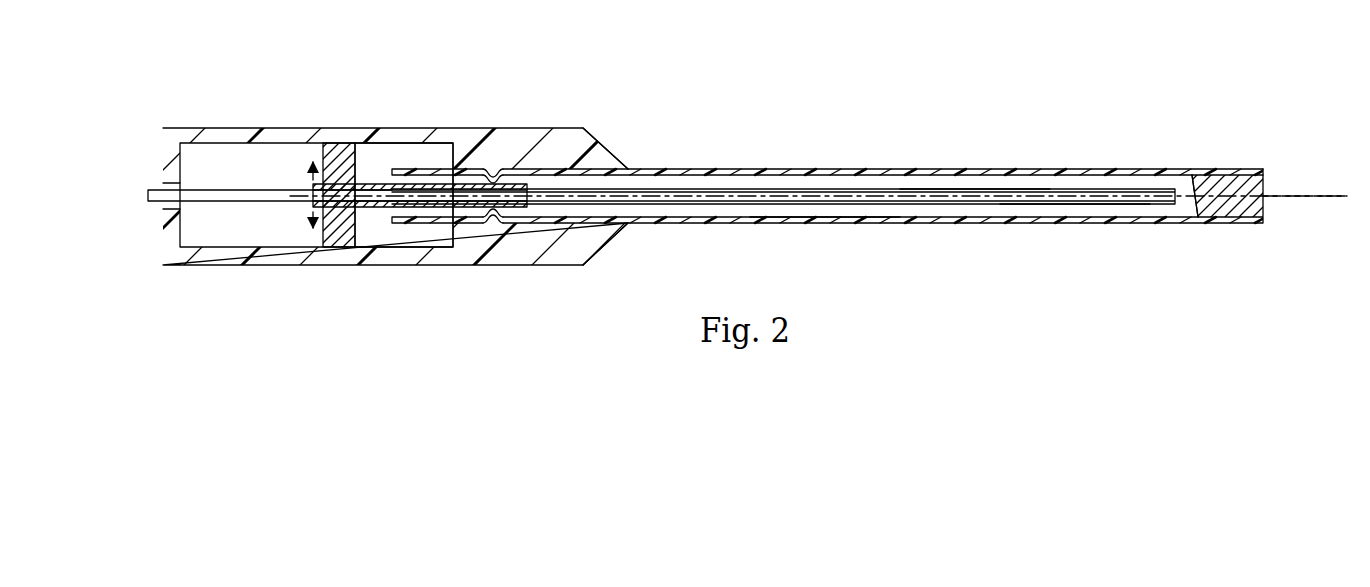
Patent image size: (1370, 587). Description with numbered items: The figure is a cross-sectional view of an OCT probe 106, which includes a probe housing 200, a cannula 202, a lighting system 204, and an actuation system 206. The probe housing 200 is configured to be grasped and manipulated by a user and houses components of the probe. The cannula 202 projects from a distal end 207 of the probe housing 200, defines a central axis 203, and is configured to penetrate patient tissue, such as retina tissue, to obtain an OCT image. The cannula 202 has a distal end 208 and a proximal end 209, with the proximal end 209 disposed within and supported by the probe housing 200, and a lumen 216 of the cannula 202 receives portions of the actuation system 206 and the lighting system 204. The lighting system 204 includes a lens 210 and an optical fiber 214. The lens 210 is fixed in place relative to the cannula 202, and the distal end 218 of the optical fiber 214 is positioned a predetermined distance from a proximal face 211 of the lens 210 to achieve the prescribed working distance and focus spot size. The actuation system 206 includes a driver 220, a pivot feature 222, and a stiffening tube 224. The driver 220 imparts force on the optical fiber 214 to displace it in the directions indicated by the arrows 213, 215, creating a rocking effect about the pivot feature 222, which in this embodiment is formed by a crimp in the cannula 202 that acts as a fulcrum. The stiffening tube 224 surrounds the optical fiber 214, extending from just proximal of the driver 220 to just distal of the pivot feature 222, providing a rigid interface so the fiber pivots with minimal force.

The OCT probe 106 is at (767, 93).
The probe housing 200 is at (221, 268).
The cannula 202 is at (995, 228).
The central axis 203 is at (1318, 198).
The lighting system 204 is at (1072, 151).
The actuation system 206 is at (520, 283).
The distal end of the probe housing 207 is at (602, 246).
The distal end of the cannula 208 is at (1199, 173).
The proximal end of the cannula 209 is at (405, 226).
The lens 210 is at (1222, 213).
The proximal face of the lens 211 is at (1188, 204).
The arrow 213 is at (311, 172).
The optical fiber 214 is at (967, 190).
The arrow 215 is at (311, 220).
The lumen 216 is at (812, 211).
The distal end of the optical fiber 218 is at (1094, 205).
The driver 220 is at (345, 241).
The pivot feature 222 is at (495, 169).
The stiffening tube 224 is at (383, 177).